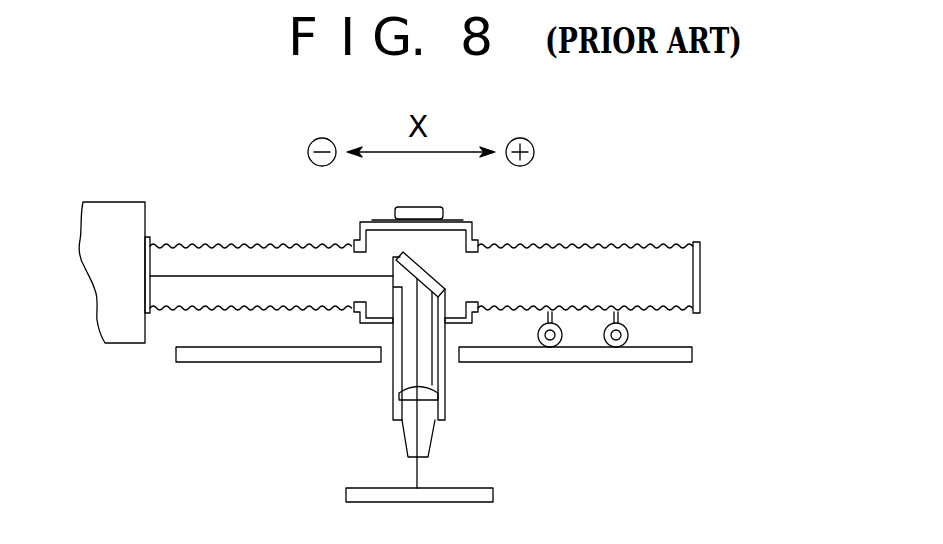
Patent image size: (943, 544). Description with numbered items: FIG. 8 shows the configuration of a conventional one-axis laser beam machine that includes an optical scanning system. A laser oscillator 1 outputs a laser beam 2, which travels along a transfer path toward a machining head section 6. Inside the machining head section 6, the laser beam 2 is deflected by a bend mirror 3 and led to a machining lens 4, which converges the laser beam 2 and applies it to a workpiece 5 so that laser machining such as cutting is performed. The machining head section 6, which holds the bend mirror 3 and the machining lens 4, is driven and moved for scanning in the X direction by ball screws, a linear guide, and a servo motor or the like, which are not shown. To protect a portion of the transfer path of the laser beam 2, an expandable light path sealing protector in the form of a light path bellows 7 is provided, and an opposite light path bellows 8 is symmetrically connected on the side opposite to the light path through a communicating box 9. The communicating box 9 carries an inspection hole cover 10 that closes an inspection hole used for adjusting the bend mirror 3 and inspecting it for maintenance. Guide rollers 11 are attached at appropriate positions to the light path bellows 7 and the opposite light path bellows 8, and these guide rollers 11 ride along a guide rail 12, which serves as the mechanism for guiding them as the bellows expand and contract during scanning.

The laser oscillator 1 is at (112, 208).
The laser beam 2 is at (240, 275).
The bend mirror 3 is at (432, 273).
The machining lens 4 is at (437, 387).
The workpiece 5 is at (493, 493).
The machining head section 6 is at (392, 370).
The light path bellows 7 is at (193, 245).
The opposite light path bellows 8 is at (602, 245).
The communicating box 9 is at (360, 222).
The inspection hole cover 10 is at (425, 204).
The guide rollers 11 is at (615, 337).
The guide rail 12 is at (518, 355).